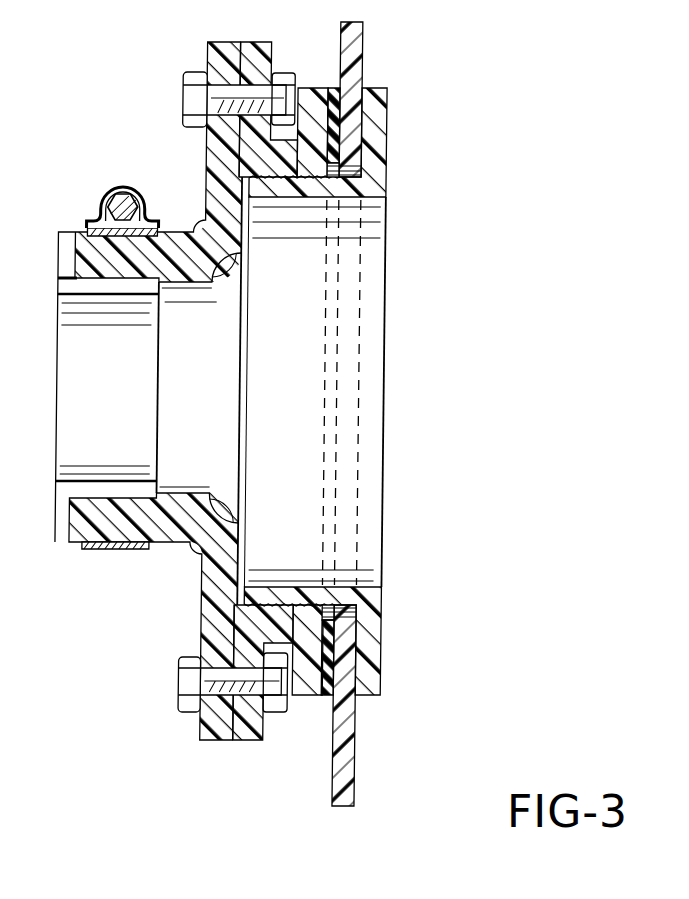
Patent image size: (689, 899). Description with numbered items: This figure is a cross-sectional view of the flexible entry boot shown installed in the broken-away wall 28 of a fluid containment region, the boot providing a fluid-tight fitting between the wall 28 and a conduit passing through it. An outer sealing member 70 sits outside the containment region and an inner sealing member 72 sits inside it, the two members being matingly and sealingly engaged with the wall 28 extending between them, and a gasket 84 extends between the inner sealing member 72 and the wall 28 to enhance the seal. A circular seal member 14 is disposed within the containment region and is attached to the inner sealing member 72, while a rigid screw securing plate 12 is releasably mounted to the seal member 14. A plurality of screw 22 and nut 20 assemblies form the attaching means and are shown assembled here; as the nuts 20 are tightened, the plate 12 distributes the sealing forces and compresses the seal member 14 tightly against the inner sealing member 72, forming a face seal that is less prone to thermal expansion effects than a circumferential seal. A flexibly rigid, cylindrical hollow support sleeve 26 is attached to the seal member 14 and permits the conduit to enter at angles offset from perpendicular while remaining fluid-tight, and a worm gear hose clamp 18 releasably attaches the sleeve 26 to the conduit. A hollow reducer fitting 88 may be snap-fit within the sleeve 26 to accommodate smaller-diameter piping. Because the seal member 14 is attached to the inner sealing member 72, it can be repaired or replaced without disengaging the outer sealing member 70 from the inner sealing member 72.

The screw securing plate 12 is at (203, 740).
The seal member 14 is at (224, 740).
The worm gear hose clamp 18 is at (112, 192).
The nut 20 is at (283, 73).
The screw 22 is at (186, 658).
The hollow support sleeve 26 is at (164, 533).
The wall 28 is at (357, 441).
The outer sealing member 70 is at (383, 632).
The inner sealing member 72 is at (309, 695).
The gasket 84 is at (323, 308).
The reducer fitting 88 is at (57, 542).